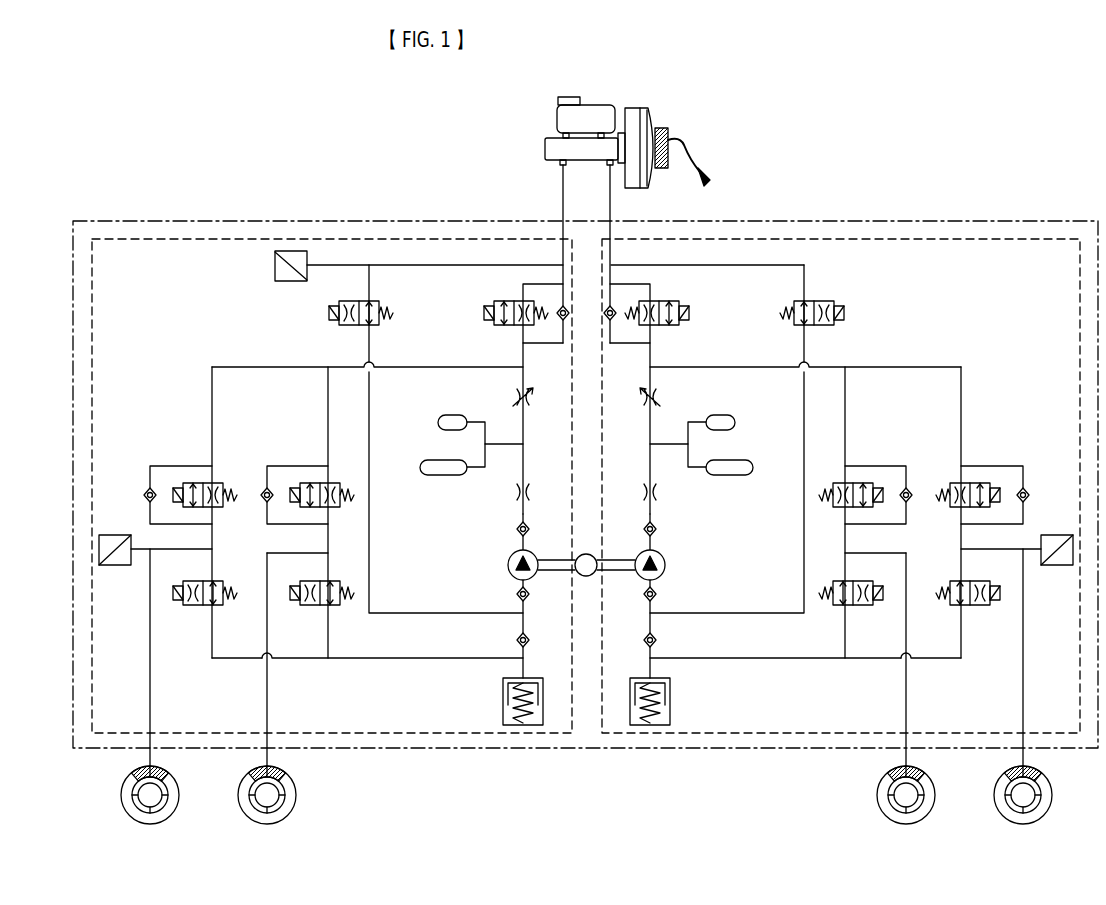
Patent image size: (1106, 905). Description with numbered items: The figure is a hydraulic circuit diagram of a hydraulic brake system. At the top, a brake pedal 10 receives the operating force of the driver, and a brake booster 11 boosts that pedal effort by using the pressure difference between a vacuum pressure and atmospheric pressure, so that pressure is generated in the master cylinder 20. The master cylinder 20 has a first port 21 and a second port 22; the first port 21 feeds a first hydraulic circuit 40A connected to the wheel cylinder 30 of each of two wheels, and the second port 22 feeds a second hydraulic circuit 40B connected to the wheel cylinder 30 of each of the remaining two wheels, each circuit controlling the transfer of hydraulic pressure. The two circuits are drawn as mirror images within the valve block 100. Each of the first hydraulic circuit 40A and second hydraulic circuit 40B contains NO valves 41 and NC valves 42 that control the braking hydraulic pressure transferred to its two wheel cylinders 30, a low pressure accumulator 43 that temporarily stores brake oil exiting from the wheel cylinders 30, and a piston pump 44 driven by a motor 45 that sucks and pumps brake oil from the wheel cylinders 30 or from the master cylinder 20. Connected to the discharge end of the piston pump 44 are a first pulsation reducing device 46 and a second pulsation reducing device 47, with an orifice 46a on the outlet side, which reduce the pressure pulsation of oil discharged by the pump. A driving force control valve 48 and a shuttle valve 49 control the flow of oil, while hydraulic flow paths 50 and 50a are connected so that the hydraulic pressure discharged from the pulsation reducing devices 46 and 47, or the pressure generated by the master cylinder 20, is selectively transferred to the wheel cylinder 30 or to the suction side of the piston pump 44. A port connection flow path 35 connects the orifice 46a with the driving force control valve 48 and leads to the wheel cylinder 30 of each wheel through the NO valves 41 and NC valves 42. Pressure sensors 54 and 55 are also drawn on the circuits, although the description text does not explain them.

The brake pedal 10 is at (688, 142).
The brake booster 11 is at (654, 186).
The master cylinder 20 is at (545, 148).
The first port 21 is at (610, 170).
The second port 22 is at (563, 170).
The wheel cylinder 30 is at (121, 792).
The port connection flow path 35 is at (255, 367).
The first hydraulic circuit 40A is at (238, 239).
The second hydraulic circuit 40B is at (877, 239).
The NO valve 41 is at (178, 483).
The NC valve 42 is at (178, 581).
The low pressure accumulator 43 is at (503, 693).
The piston pump 44 is at (509, 570).
The motor 45 is at (586, 576).
The first pulsation reducing device 46 is at (420, 467).
The orifice 46a is at (516, 397).
The second pulsation reducing device 47 is at (438, 422).
The driving force control valve 48 is at (500, 300).
The shuttle valve 49 is at (348, 300).
The hydraulic flow path 50 is at (523, 355).
The hydraulic flow path 50a is at (369, 542).
The pressure sensor 54 is at (275, 266).
The pressure sensor 55 is at (115, 535).
The valve block 100 is at (813, 221).